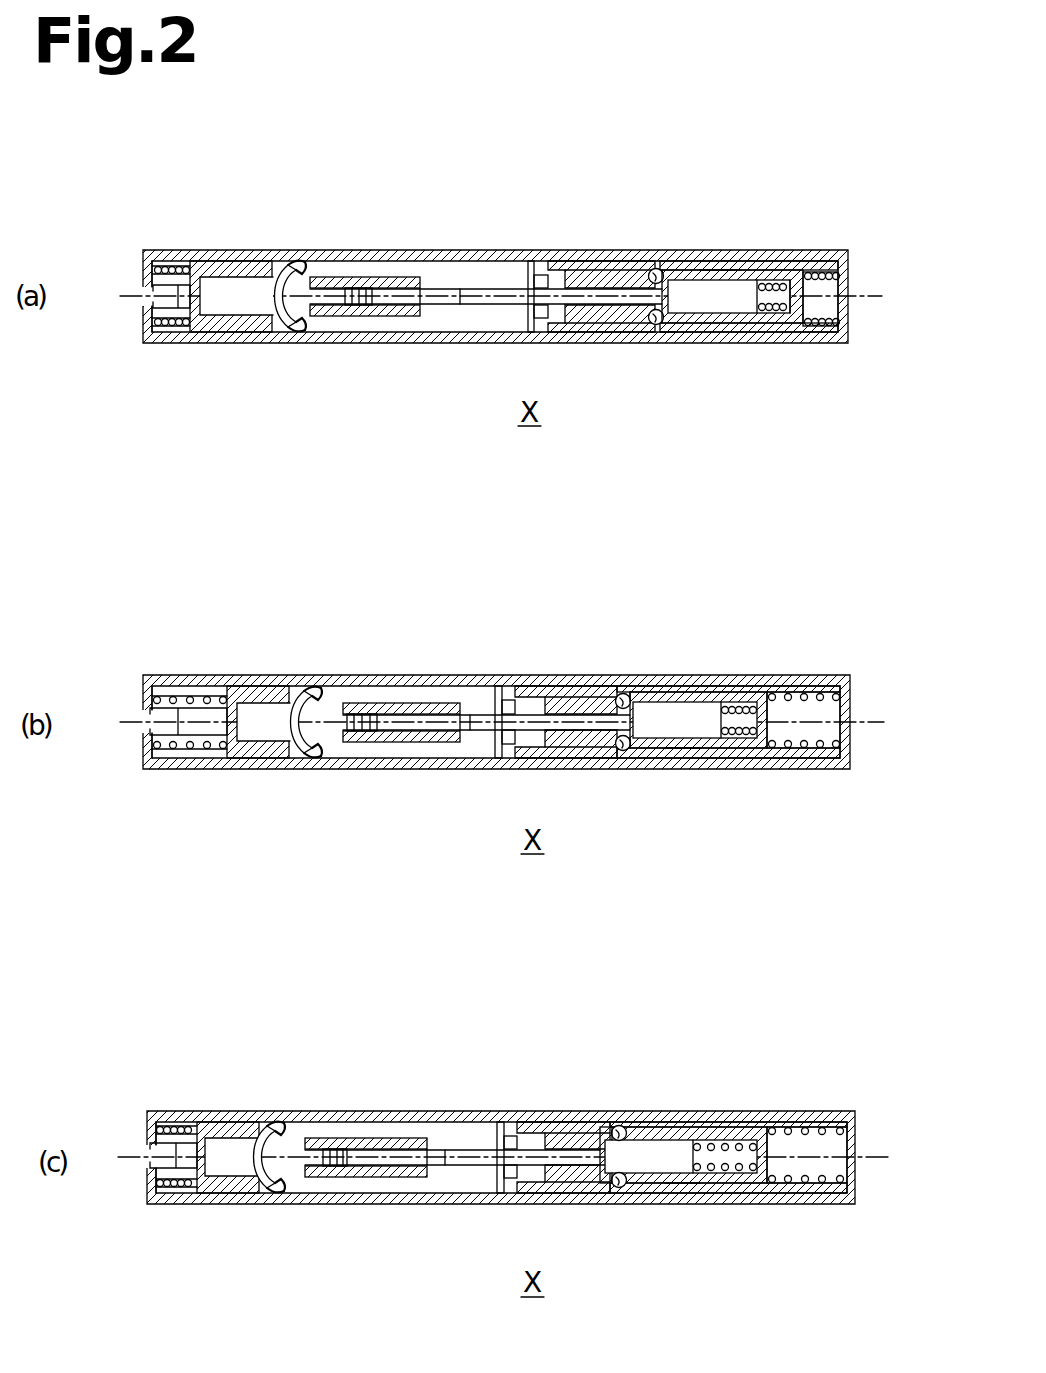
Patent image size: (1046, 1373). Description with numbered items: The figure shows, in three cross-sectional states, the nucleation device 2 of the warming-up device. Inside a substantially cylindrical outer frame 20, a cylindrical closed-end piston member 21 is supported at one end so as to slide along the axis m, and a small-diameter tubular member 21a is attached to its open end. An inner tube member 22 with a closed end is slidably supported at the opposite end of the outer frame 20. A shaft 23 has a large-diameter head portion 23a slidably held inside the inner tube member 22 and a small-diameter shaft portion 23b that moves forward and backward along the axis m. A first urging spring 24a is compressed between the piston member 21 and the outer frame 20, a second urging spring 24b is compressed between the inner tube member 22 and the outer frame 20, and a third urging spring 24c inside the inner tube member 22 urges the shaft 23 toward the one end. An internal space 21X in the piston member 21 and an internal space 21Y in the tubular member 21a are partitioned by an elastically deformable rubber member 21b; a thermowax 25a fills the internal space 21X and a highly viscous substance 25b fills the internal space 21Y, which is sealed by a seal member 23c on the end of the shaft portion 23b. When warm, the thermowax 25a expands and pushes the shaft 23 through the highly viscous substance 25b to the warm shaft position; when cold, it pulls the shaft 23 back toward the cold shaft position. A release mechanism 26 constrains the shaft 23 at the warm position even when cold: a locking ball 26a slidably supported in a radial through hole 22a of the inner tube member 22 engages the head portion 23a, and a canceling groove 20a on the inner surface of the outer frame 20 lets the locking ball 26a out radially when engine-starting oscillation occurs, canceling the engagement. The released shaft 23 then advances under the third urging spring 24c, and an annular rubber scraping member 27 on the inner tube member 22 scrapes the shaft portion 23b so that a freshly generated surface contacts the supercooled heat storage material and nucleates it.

The nucleation device 2 is at (484, 218).
The outer frame 20 is at (552, 259).
The canceling groove 20a is at (600, 262).
The piston member 21 is at (240, 268).
The tubular member 21a is at (410, 278).
The rubber member 21b is at (255, 316).
The internal space 21X is at (215, 312).
The internal space 21Y is at (292, 324).
The inner tube member 22 is at (765, 270).
The through hole 22a is at (657, 268).
The shaft 23 is at (500, 290).
The head portion 23a is at (722, 262).
The shaft portion 23b is at (440, 305).
The seal member 23c is at (358, 308).
The first urging spring 24a is at (168, 266).
The second urging spring 24b is at (820, 330).
The third urging spring 24c is at (782, 284).
The thermowax 25a is at (280, 280).
The highly viscous substance 25b is at (308, 268).
The release mechanism 26 is at (666, 344).
The locking ball 26a is at (668, 252).
The rubber scraping member 27 is at (528, 330).
The axis m is at (858, 294).